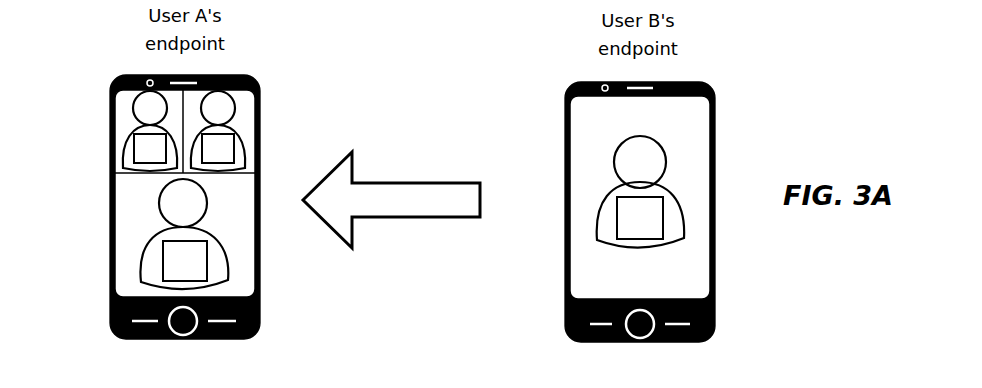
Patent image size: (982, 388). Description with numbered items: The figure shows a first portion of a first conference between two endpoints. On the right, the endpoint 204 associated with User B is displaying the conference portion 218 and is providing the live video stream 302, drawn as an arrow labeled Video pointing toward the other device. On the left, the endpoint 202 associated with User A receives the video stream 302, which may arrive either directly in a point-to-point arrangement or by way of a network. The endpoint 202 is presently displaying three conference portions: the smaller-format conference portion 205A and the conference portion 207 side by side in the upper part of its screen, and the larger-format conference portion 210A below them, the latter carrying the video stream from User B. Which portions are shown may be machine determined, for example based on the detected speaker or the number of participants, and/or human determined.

The endpoint 202 is at (253, 84).
The endpoint 204 is at (706, 82).
The conference portion 205A is at (122, 111).
The conference portion 207 is at (248, 124).
The conference portion 210A is at (139, 208).
The conference portion 218 is at (690, 160).
The live video stream 302 is at (403, 183).